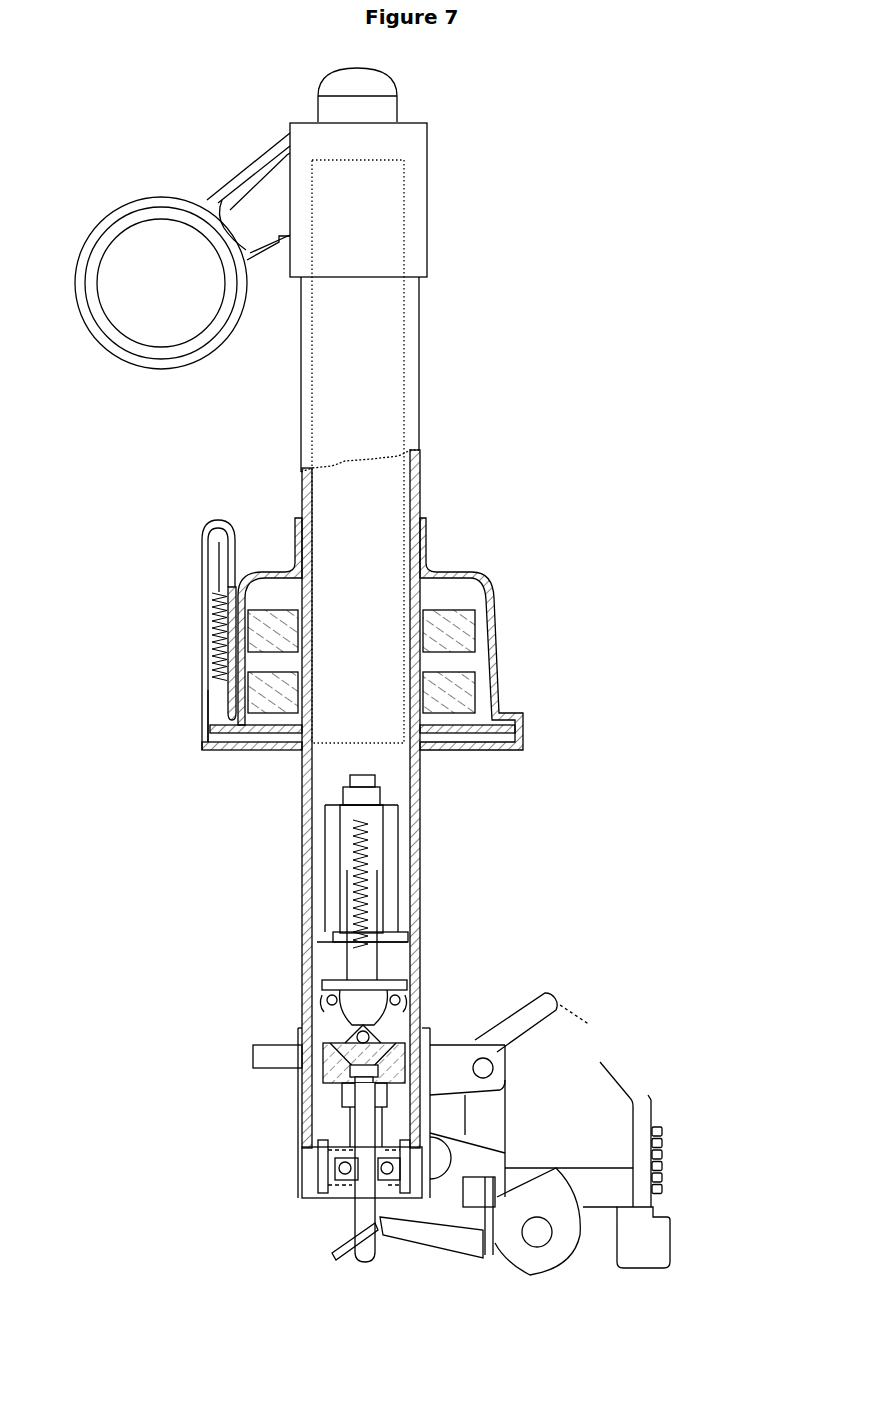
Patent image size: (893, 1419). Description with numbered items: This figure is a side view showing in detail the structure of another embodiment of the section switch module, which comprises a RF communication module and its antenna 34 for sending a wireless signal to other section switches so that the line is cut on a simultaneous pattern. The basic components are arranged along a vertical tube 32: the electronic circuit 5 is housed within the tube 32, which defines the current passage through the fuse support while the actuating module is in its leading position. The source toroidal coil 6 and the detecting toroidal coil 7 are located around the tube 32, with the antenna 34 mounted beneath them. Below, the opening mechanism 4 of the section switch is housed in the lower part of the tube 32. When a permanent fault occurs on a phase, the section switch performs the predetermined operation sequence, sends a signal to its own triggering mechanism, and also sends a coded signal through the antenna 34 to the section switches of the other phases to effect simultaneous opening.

The tube 32 is at (420, 473).
The electronic circuit 5 is at (367, 553).
The source toroidal coil 6 is at (428, 627).
The detecting toroidal coil 7 is at (433, 693).
The antenna 34 is at (438, 732).
The opening mechanism 4 is at (363, 967).